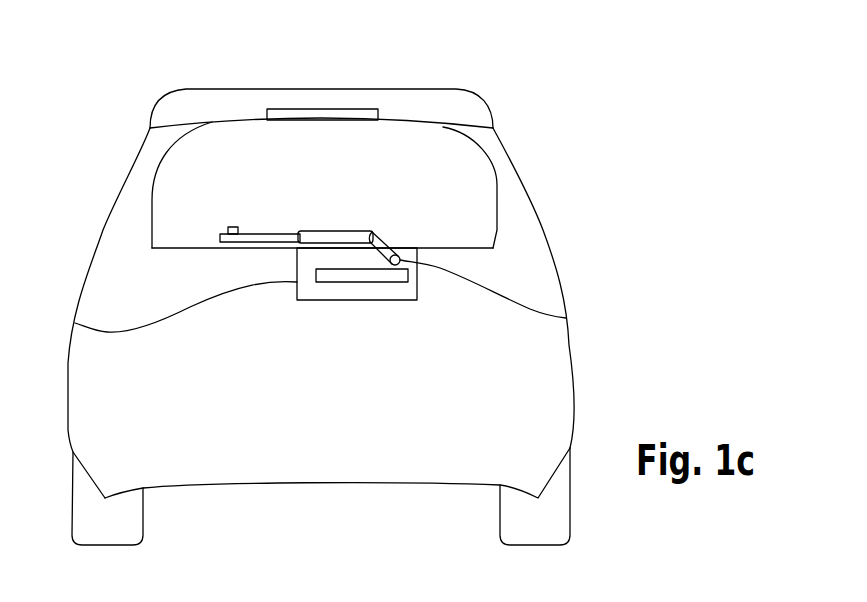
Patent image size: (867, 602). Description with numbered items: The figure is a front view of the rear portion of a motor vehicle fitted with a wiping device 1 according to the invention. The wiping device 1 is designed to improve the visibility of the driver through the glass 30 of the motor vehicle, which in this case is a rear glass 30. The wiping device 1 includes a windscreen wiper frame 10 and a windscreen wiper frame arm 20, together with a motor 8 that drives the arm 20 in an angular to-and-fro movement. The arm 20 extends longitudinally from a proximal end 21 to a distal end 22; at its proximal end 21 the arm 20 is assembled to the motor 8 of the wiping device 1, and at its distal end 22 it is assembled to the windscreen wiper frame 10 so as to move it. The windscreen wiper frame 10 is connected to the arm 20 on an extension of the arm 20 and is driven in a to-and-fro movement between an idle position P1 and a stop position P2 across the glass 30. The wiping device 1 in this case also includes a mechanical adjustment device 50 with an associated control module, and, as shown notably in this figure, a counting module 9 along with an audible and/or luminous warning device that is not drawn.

The wiping device 1 is at (254, 150).
The motor 8 is at (80, 325).
The counting module 9 is at (228, 227).
The windscreen wiper frame 10 is at (256, 233).
The windscreen wiper frame arm 20 is at (375, 232).
The proximal end 21 is at (408, 246).
The distal end 22 is at (290, 232).
The glass 30 is at (462, 187).
The mechanical adjustment device 50 is at (566, 318).
The idle position P1 is at (205, 231).
The stop position P2 is at (418, 150).